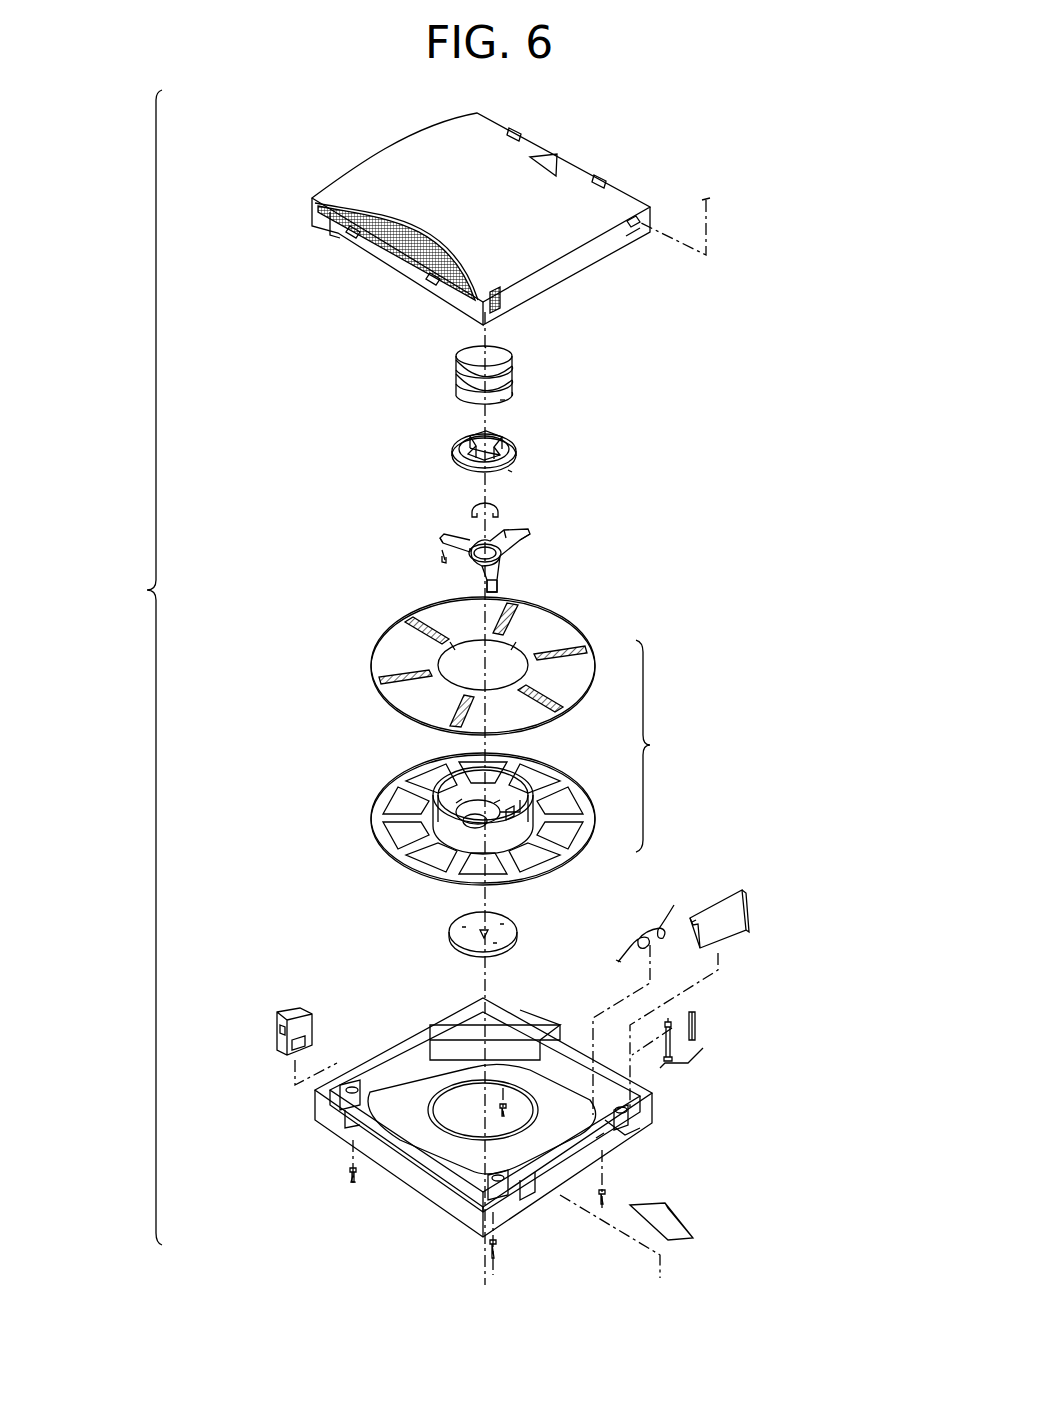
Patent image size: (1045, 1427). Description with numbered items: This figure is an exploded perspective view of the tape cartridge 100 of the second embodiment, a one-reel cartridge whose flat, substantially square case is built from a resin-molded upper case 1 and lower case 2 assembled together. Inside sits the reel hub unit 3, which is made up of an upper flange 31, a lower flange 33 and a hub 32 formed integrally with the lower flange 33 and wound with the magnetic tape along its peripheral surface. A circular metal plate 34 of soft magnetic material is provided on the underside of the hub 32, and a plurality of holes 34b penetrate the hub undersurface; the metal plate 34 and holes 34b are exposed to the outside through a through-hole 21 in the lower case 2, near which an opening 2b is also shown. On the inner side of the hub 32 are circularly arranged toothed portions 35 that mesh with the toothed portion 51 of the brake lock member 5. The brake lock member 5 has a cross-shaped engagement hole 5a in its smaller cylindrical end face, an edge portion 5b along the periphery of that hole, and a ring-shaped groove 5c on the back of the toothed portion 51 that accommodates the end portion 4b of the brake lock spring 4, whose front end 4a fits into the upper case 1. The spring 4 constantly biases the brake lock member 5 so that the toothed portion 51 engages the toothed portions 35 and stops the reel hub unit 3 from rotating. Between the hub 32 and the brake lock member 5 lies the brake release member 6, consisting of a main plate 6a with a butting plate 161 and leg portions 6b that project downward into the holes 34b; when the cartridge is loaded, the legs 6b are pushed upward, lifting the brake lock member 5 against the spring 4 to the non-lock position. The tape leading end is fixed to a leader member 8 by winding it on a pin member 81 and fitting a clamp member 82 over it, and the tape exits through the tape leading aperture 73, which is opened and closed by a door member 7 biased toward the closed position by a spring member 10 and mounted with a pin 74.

The tape cartridge 100 is at (118, 667).
The upper case 1 is at (384, 285).
The lower case 2 is at (488, 1138).
The lower shell opening 2b is at (600, 1140).
The through-hole 21 is at (450, 1115).
The reel hub unit 3 is at (654, 746).
The brake lock spring 4 is at (520, 373).
The front end 4a is at (497, 348).
The end portion 4b is at (500, 400).
The brake lock member 5 is at (495, 438).
The cross-shaped engagement hole 5a is at (470, 437).
The edge portion 5b is at (465, 462).
The ring-shaped groove 5c is at (465, 453).
The toothed portion 51 is at (508, 470).
The butting plate 161 is at (498, 508).
The brake release member 6 is at (485, 560).
The main plate 6a is at (525, 541).
The leg portions 6b is at (490, 586).
The upper flange 31 is at (565, 632).
The hub 32 is at (477, 824).
The lower flange 33 is at (392, 862).
The metal plate 34 is at (450, 932).
The holes 34b is at (515, 812).
The toothed portions 35 is at (520, 805).
The spring member 10 is at (650, 915).
The door member 7 is at (726, 890).
The leader member 8 is at (684, 1069).
The pin member 81 is at (672, 1018).
The clamp member 82 is at (698, 1026).
The tape leading aperture 73 is at (624, 237).
The hinge pin 74 is at (706, 200).